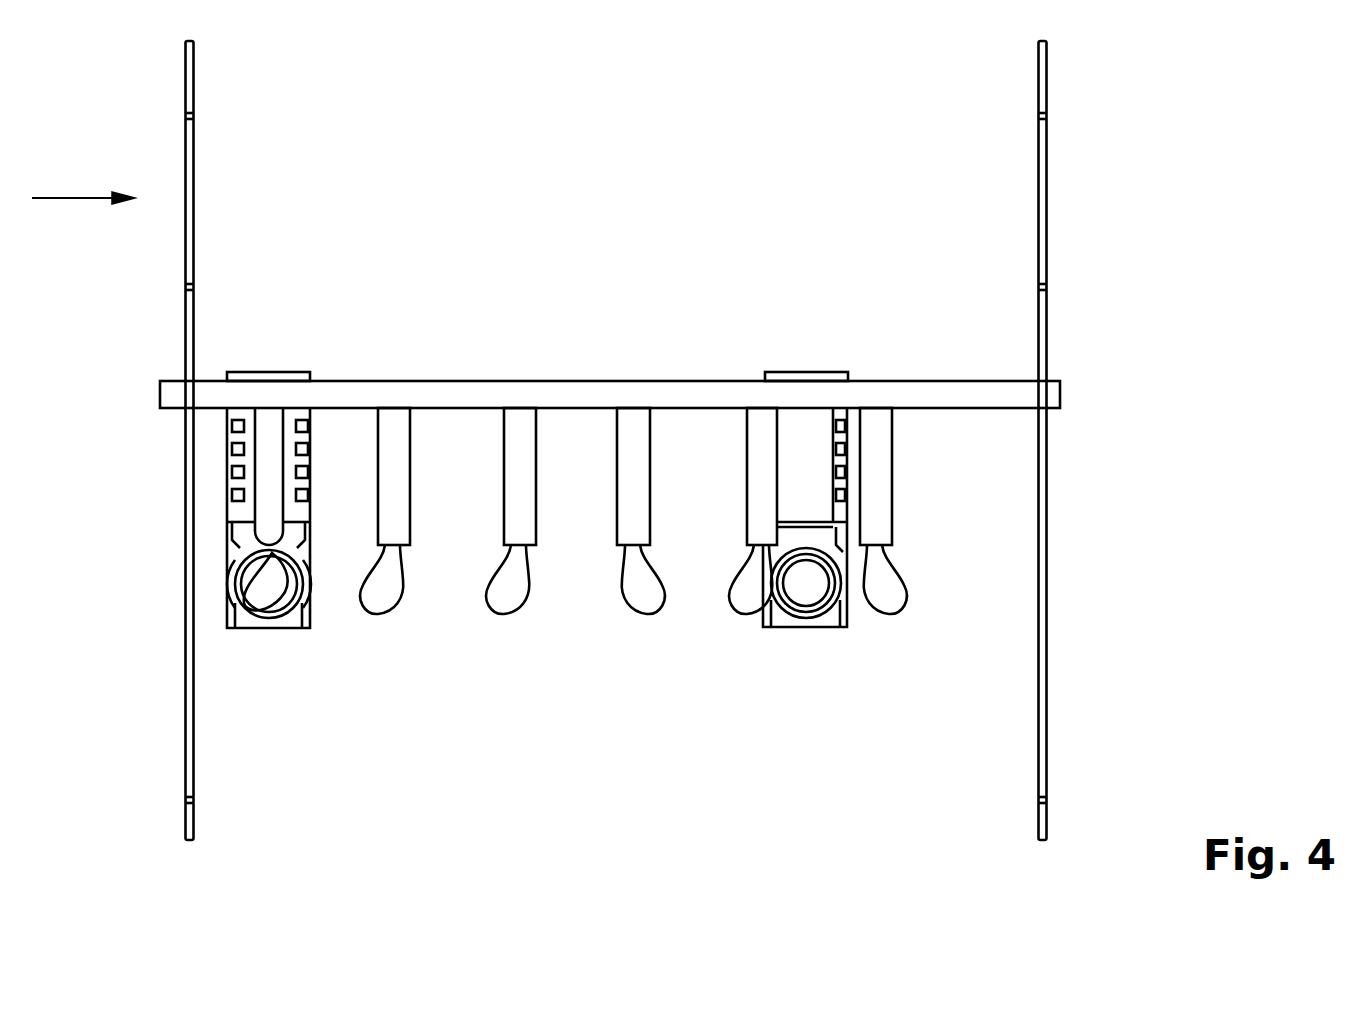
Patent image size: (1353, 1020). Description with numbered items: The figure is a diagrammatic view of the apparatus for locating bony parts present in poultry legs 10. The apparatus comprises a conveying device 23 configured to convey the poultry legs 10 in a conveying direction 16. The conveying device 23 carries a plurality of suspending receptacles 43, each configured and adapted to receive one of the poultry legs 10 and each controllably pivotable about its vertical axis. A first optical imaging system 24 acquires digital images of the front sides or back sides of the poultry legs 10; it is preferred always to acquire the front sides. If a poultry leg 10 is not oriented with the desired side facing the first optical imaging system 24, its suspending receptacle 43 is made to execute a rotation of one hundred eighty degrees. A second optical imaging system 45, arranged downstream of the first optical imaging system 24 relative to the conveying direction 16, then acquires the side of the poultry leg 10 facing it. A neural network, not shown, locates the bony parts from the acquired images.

The conveying direction 16 is at (79, 198).
The conveying device 23 is at (1022, 272).
The suspending receptacle 43 is at (394, 422).
The poultry leg 10 is at (383, 595).
The first optical imaging system 24 is at (297, 628).
The second optical imaging system 45 is at (831, 627).